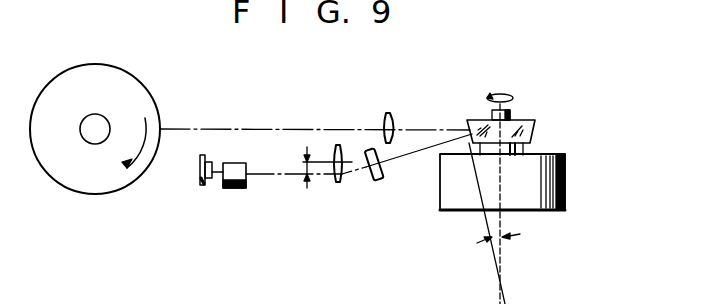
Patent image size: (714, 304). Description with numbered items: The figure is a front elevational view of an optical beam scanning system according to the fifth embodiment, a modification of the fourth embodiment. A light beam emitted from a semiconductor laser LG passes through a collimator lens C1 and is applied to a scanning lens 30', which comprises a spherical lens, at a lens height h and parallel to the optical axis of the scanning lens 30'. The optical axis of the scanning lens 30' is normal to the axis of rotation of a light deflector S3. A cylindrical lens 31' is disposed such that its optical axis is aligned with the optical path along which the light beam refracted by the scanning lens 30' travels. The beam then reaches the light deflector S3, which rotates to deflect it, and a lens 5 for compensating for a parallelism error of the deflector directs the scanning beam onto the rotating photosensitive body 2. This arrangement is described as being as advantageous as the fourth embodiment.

The photosensitive body 2 is at (152, 97).
The lens 5 is at (390, 112).
The semiconductor laser LG is at (200, 185).
The collimator lens C1 is at (243, 189).
The lens height h is at (307, 169).
The scanning lens 30' is at (336, 180).
The cylindrical lens 31' is at (382, 181).
The light deflector S3 is at (563, 136).